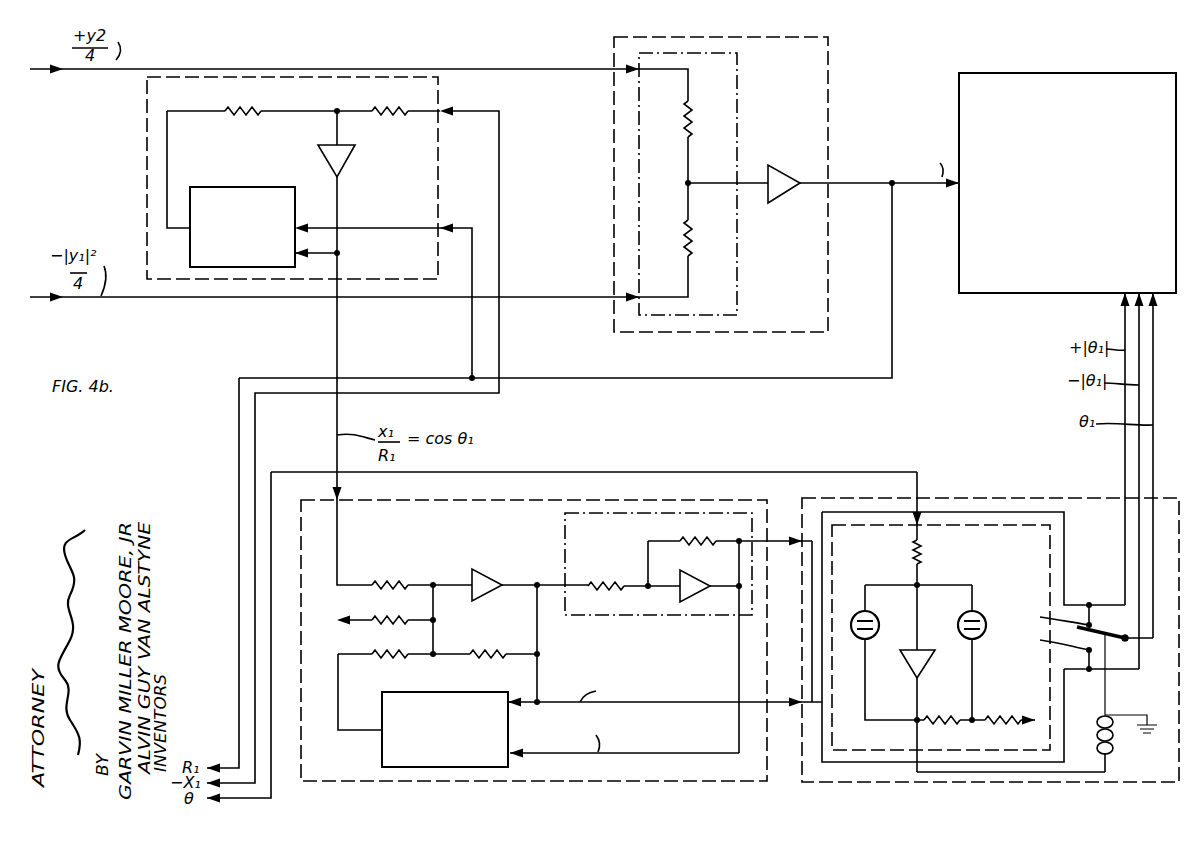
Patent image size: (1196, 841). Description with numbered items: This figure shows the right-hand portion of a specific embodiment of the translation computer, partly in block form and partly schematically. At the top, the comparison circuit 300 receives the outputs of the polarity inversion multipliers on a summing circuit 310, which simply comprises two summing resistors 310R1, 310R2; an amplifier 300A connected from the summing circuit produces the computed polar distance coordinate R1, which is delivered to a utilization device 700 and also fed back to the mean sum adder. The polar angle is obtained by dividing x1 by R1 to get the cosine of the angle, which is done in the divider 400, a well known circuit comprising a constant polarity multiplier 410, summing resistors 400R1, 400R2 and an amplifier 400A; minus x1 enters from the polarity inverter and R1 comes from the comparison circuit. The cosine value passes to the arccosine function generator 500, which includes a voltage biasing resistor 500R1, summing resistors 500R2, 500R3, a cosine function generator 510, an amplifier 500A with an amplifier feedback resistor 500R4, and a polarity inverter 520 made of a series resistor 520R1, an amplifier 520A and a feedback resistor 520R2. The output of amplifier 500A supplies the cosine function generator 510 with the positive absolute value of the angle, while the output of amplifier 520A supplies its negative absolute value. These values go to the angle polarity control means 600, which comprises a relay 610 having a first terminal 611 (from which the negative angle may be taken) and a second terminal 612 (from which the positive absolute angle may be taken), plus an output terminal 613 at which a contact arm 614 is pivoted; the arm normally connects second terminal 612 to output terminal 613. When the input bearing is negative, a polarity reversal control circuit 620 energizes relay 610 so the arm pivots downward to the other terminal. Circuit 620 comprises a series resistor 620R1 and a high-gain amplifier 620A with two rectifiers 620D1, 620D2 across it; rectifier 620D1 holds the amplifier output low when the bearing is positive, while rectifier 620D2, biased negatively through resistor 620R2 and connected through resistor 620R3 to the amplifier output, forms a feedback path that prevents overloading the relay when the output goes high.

The comparison circuit 300 is at (599, 206).
The summing circuit 310 is at (715, 184).
The summing resistor 310R1 is at (688, 130).
The summing resistor 310R2 is at (688, 230).
The amplifier 300A is at (785, 195).
The utilization device 700 is at (1081, 73).
The divider 400 is at (288, 432).
The summing resistor 400R1 is at (215, 148).
The summing resistor 400R2 is at (416, 140).
The amplifier 400A is at (343, 160).
The constant polarity multiplier 410 is at (215, 187).
The arccosine function generator 500 is at (556, 629).
The voltage biasing resistor 500R1 is at (382, 612).
The summing resistor 500R2 is at (405, 580).
The summing resistor 500R3 is at (379, 650).
The amplifier feedback resistor 500R4 is at (492, 636).
The amplifier 500A is at (463, 580).
The cosine function generator 510 is at (382, 744).
The polarity inverter 520 is at (669, 632).
The series resistor 520R1 is at (612, 567).
The feedback resistor 520R2 is at (705, 538).
The amplifier 520A is at (671, 593).
The angle polarity control means 600 is at (990, 622).
The relay 610 is at (1110, 735).
The first terminal 611 is at (1044, 640).
The second terminal 612 is at (1044, 618).
The output terminal 613 is at (1124, 641).
The contact arm 614 is at (1095, 630).
The polarity reversal control circuit 620 is at (941, 617).
The series resistor 620R1 is at (912, 552).
The resistor 620R2 is at (997, 712).
The resistor 620R3 is at (945, 726).
The rectifier 620D1 is at (860, 612).
The rectifier 620D2 is at (1012, 598).
The amplifier 620A is at (905, 657).